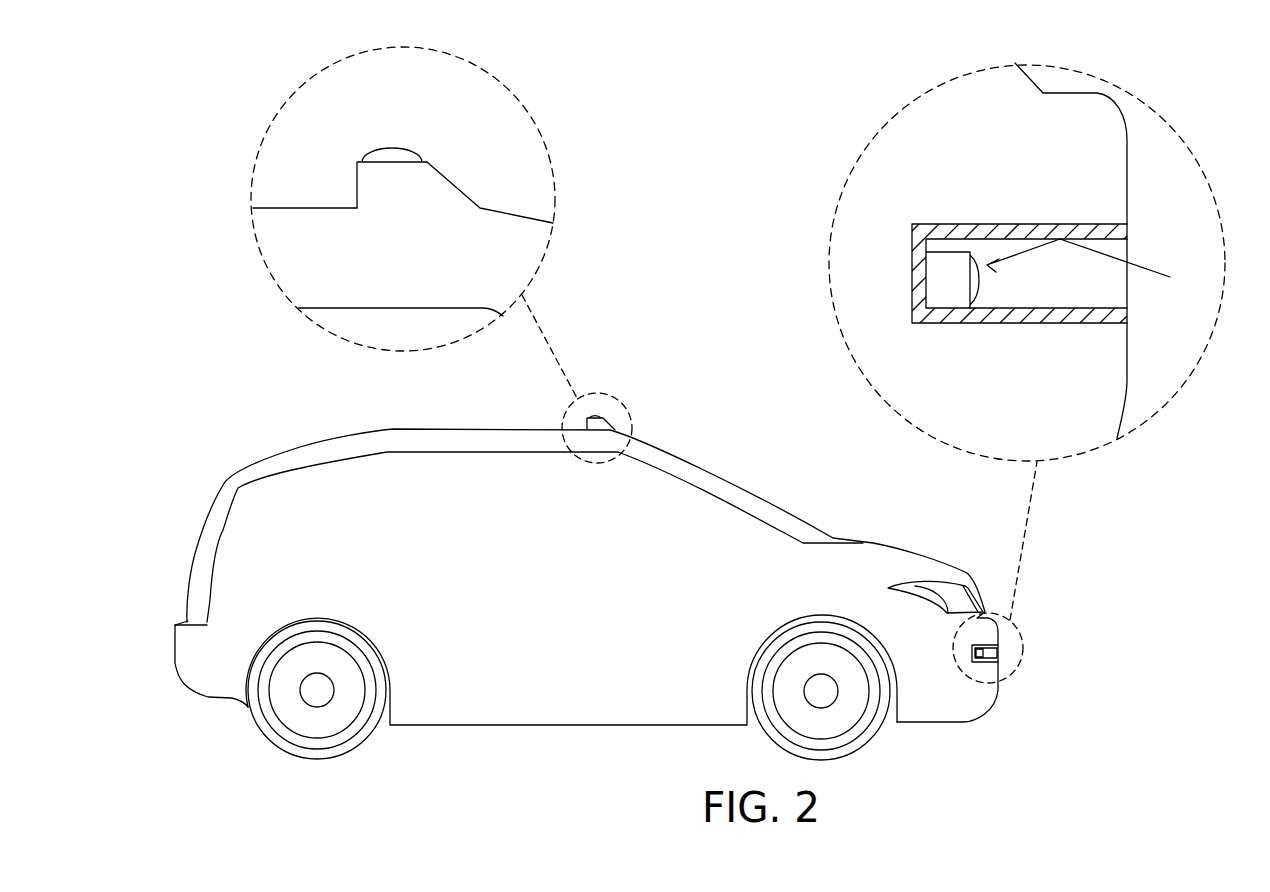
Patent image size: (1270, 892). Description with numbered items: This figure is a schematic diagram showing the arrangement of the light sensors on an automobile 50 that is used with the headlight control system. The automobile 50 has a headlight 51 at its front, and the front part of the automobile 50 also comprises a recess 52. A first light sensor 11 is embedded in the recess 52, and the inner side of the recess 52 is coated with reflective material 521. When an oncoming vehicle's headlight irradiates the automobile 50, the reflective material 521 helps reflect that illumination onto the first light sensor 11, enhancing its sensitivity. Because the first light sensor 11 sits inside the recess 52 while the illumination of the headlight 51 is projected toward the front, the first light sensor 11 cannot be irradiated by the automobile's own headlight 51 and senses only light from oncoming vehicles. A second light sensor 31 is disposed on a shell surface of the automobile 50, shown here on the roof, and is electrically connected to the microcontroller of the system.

The first light sensor 11 is at (950, 277).
The second light sensor 31 is at (382, 182).
The automobile 50 is at (1127, 753).
The headlight 51 is at (933, 593).
The recess 52 is at (1102, 290).
The reflective material 521 is at (1020, 232).